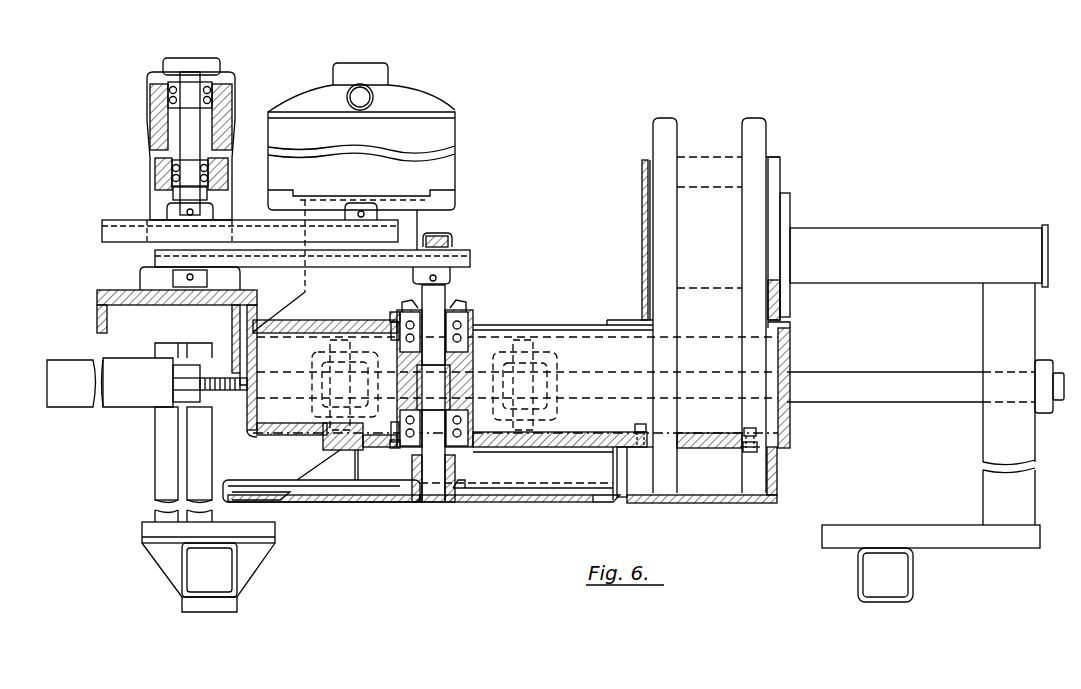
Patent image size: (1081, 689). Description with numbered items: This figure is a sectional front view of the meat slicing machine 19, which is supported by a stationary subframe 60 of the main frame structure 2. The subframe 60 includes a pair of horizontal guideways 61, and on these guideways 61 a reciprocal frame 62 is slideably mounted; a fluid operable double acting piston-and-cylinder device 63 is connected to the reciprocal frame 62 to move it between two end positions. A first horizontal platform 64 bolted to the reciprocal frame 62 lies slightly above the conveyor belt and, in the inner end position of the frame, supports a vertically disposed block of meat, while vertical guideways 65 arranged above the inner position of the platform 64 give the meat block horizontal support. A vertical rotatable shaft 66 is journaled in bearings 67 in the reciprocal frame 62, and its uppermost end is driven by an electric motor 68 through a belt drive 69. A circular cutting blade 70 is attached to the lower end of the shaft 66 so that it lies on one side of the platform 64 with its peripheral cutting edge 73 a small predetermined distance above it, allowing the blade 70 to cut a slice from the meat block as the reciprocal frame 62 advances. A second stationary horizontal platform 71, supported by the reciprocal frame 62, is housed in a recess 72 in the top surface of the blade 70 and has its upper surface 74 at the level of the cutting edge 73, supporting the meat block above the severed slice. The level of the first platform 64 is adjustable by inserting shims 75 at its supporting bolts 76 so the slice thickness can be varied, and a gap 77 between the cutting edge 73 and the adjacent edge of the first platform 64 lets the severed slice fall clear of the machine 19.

The main frame structure 2 is at (913, 580).
The meat slicing machine 19 is at (583, 205).
The stationary subframe 60 is at (906, 270).
The horizontal guideways 61 is at (856, 382).
The reciprocal frame 62 is at (105, 322).
The fluid operable double acting piston-and-cylinder device 63 is at (80, 405).
The first horizontal platform 64 is at (712, 503).
The vertical guideways 65 is at (646, 208).
The vertical rotatable shaft 66 is at (447, 401).
The bearings 67 is at (465, 320).
The electric motor 68 is at (440, 135).
The belt drive 69 is at (388, 231).
The circular cutting blade 70 is at (370, 497).
The second stationary horizontal platform 71 is at (543, 500).
The recess 72 is at (330, 497).
The peripheral cutting edge 73 is at (641, 496).
The upper surface 74 is at (525, 484).
The shims 75 is at (748, 442).
The supporting bolts 76 is at (638, 430).
The gap 77 is at (620, 502).